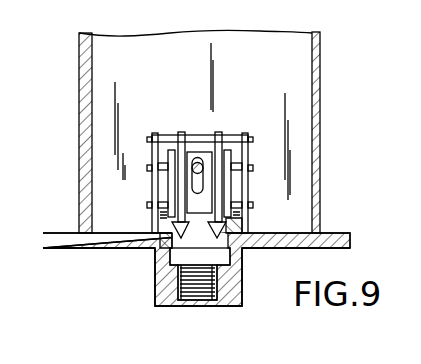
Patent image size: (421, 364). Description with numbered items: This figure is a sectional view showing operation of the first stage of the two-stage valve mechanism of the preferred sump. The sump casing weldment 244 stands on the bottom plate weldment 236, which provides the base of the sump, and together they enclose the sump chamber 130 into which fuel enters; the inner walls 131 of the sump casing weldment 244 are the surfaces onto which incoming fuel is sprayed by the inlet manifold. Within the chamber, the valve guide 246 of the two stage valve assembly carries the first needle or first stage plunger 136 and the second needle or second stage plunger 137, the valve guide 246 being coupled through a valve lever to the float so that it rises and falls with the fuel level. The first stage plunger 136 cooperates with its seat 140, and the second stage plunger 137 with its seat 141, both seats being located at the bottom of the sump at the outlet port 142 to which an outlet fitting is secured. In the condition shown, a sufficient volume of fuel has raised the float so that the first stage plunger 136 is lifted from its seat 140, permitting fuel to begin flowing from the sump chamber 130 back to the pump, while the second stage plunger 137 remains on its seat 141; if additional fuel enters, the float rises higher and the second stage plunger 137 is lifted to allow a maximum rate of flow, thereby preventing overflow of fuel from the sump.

The sump chamber 130 is at (148, 52).
The inner walls 131 is at (94, 48).
The first needle or first stage plunger 136 is at (230, 219).
The second needle or second stage plunger 137 is at (167, 237).
The seat 140 is at (298, 249).
The seat 141 is at (172, 252).
The outlet port 142 is at (242, 263).
The bottom plate weldment 236 is at (351, 233).
The sump casing weldment 244 is at (79, 143).
The valve guide 246 is at (197, 158).